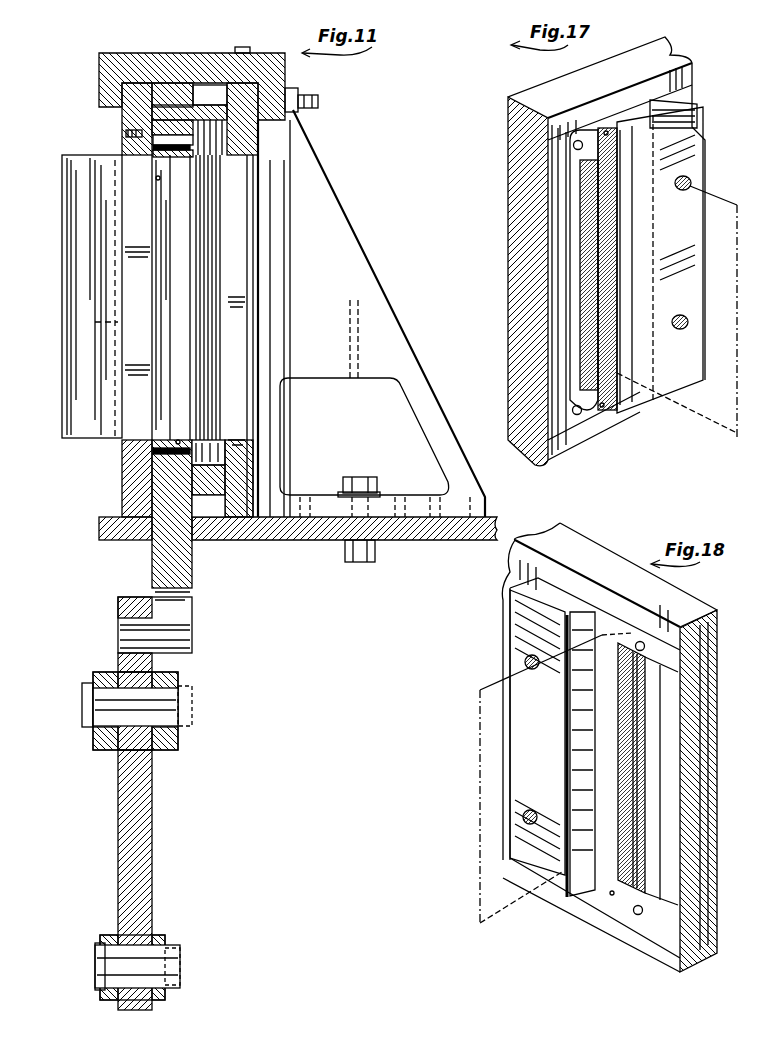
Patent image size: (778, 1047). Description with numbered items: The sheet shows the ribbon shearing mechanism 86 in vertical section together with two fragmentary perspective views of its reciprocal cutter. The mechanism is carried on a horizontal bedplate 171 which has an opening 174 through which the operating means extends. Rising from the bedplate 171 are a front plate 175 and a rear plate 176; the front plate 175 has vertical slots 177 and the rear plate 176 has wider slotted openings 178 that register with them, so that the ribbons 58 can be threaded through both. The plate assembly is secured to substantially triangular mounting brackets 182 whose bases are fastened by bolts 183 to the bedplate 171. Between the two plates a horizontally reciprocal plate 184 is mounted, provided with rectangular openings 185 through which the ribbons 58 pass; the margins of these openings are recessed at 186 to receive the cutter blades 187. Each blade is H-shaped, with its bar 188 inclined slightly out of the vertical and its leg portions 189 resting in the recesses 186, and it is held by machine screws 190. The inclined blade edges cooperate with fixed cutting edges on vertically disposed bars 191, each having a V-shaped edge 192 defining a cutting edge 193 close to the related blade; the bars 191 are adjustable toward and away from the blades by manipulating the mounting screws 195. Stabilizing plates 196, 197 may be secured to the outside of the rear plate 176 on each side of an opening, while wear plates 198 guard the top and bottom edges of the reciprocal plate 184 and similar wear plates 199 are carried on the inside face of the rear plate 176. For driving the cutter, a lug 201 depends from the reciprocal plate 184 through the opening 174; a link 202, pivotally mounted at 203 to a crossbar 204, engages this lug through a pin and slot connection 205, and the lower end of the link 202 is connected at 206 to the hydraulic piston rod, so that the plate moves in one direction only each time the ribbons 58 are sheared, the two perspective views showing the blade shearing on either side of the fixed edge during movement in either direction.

In FIG. 11, the shearing mechanism 86 is at (142, 44).
In FIG. 11, the bedplate 171 is at (282, 541).
In FIG. 11, the opening 174 is at (150, 544).
In FIG. 11, the front plate 175 is at (250, 146).
In FIG. 11, the rear plate 176 is at (108, 107).
In FIG. 11, the vertical slots 177 is at (245, 200).
In FIG. 11, the slotted vertical openings 178 is at (128, 408).
In FIG. 11, the mounting brackets 182 is at (395, 328).
In FIG. 11, the bolts 183 is at (380, 449).
In FIG. 11, the reciprocal plate 184 is at (122, 119).
In FIG. 17, the reciprocal plate 184 is at (540, 95).
In FIG. 18, the reciprocal plate 184 is at (657, 952).
In FIG. 11, the rectangular openings 185 is at (152, 168).
In FIG. 17, the rectangular openings 185 is at (575, 247).
In FIG. 18, the rectangular openings 185 is at (645, 832).
In FIG. 11, the recesses 186 is at (126, 133).
In FIG. 11, the cutter blades 187 is at (190, 247).
In FIG. 17, the cutter blades 187 is at (585, 295).
In FIG. 18, the cutter blades 187 is at (628, 789).
In FIG. 11, the bar 188 is at (185, 310).
In FIG. 17, the bar 188 is at (598, 320).
In FIG. 18, the bar 188 is at (610, 692).
In FIG. 11, the leg portions 189 is at (160, 182).
In FIG. 17, the leg portions 189 is at (598, 408).
In FIG. 18, the leg portions 189 is at (612, 895).
In FIG. 17, the machine screws 190 is at (572, 145).
In FIG. 18, the machine screws 190 is at (650, 646).
In FIG. 11, the bars 191 is at (215, 278).
In FIG. 17, the bars 191 is at (705, 143).
In FIG. 18, the bars 191 is at (520, 625).
In FIG. 11, the V-shaped edge 192 is at (207, 405).
In FIG. 17, the V-shaped edge 192 is at (632, 260).
In FIG. 18, the V-shaped edge 192 is at (575, 719).
In FIG. 11, the cutting edge 193 is at (188, 222).
In FIG. 17, the cutting edge 193 is at (608, 122).
In FIG. 18, the cutting edge 193 is at (595, 620).
In FIG. 17, the mounting screws 195 is at (691, 181).
In FIG. 18, the mounting screws 195 is at (524, 662).
In FIG. 11, the stabilizing plate 196 is at (65, 345).
In FIG. 11, the stabilizing plate 197 is at (95, 302).
In FIG. 11, the wear plates 198 is at (197, 82).
In FIG. 11, the wear plates 199 is at (125, 151).
In FIG. 11, the lug 201 is at (193, 570).
In FIG. 11, the link 202 is at (152, 805).
In FIG. 11, the pivot 203 is at (192, 702).
In FIG. 11, the crossbar 204 is at (180, 745).
In FIG. 11, the pin and slot connection 205 is at (123, 629).
In FIG. 11, the connection 206 is at (180, 960).
In FIG. 17, the ribbons 58 is at (738, 250).
In FIG. 18, the ribbons 58 is at (490, 750).